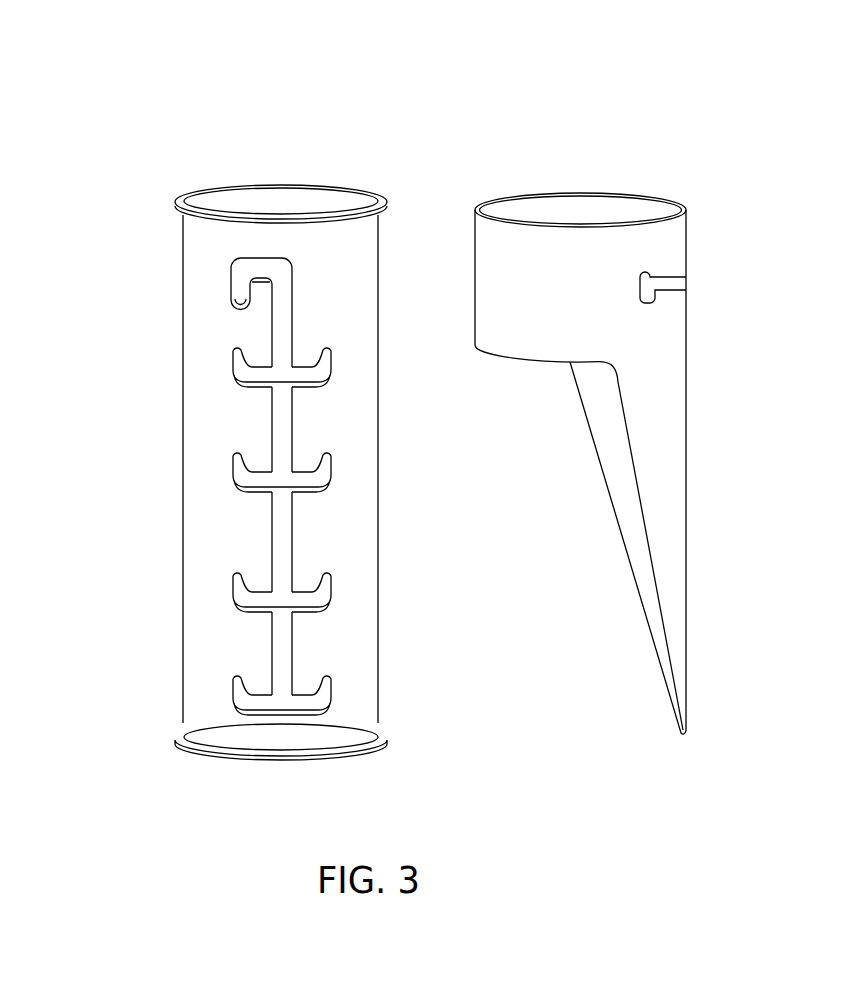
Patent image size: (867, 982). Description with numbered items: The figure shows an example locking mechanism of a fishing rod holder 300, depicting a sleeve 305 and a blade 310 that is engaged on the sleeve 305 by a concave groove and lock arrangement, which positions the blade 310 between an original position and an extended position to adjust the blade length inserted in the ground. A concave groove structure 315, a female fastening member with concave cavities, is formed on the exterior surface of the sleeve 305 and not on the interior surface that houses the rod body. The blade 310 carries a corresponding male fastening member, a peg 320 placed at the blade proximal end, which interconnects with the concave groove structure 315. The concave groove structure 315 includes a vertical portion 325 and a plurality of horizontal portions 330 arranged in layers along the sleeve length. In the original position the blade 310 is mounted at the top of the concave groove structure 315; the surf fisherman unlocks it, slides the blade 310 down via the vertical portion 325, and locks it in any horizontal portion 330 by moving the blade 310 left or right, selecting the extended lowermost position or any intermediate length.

The fishing rod holder 300 is at (150, 74).
The sleeve 305 is at (183, 473).
The blade 310 is at (686, 584).
The concave groove structure 315 is at (210, 287).
The peg 320 is at (668, 276).
The vertical portion 325 is at (272, 324).
The horizontal portions 330 is at (234, 580).